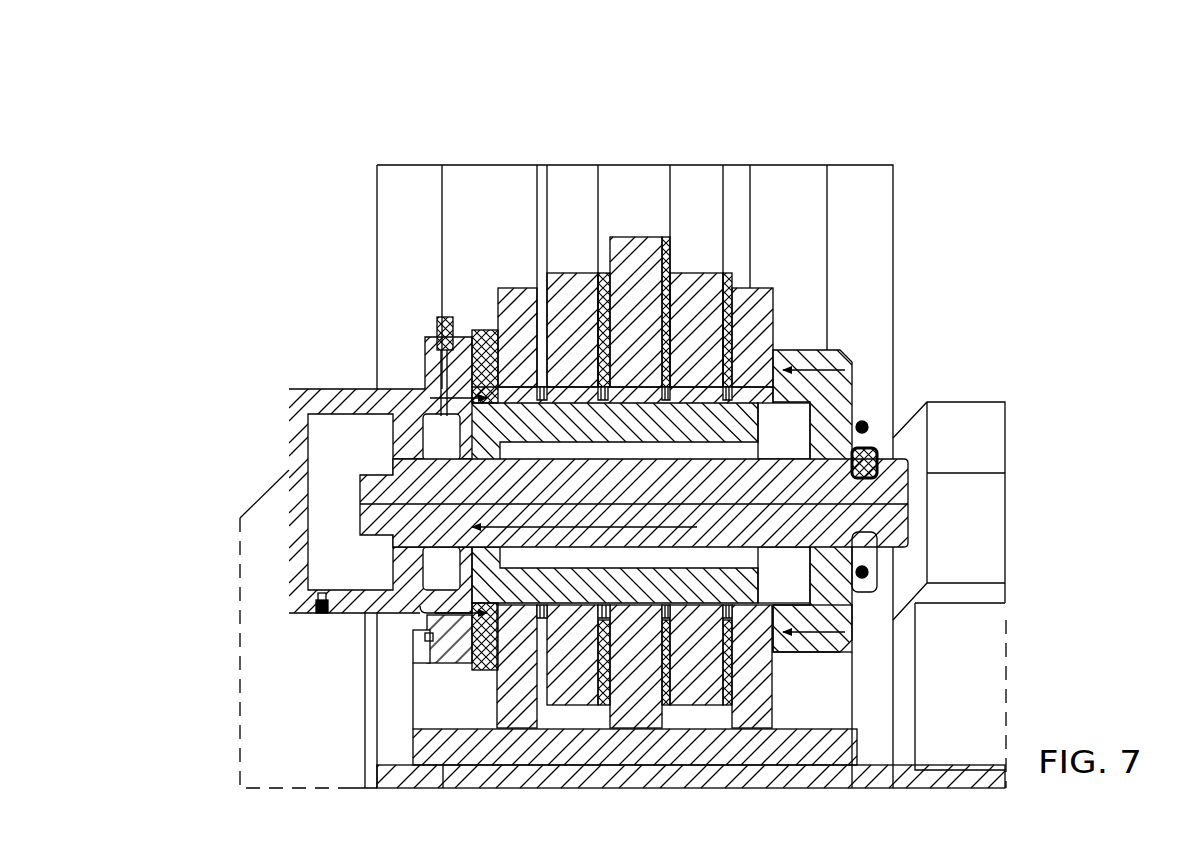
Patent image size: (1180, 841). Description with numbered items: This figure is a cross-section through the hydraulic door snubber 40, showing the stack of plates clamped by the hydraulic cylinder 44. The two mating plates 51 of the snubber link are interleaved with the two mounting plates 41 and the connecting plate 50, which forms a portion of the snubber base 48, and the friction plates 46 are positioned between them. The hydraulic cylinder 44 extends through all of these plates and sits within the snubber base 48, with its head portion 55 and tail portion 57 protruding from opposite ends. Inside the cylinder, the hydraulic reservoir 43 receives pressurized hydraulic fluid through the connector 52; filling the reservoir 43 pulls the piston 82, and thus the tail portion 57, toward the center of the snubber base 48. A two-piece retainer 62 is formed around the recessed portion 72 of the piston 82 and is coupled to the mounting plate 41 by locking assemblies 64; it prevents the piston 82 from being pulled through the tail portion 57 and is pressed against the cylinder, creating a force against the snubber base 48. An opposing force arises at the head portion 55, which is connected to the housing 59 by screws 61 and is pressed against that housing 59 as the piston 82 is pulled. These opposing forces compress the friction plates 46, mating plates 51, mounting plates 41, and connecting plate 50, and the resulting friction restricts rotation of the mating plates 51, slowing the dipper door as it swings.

The hydraulic door snubber 40 is at (962, 240).
The mounting plates 41 is at (516, 283).
The hydraulic reservoir 43 is at (428, 438).
The hydraulic cylinder 44 is at (300, 388).
The friction plates 46 is at (730, 288).
The snubber base 48 is at (845, 746).
The connecting plate 50 is at (617, 237).
The mating plates 51 is at (572, 283).
The connector 52 is at (438, 325).
The head portion 55 is at (285, 545).
The tail portion 57 is at (852, 618).
The housing 59 is at (490, 668).
The screws 61 is at (425, 636).
The retainer 62 is at (875, 420).
The locking assemblies 64 is at (320, 618).
The recessed portion 72 is at (877, 458).
The piston 82 is at (403, 560).